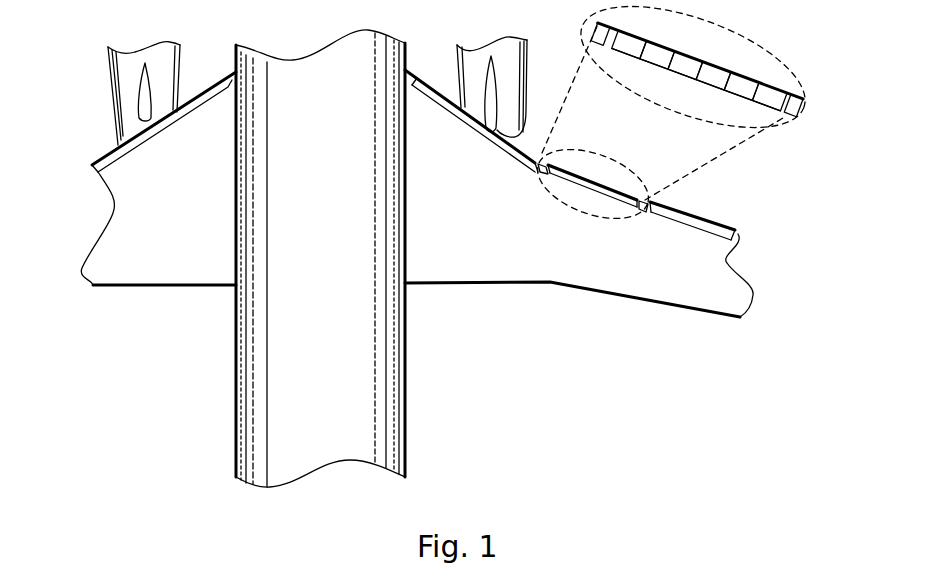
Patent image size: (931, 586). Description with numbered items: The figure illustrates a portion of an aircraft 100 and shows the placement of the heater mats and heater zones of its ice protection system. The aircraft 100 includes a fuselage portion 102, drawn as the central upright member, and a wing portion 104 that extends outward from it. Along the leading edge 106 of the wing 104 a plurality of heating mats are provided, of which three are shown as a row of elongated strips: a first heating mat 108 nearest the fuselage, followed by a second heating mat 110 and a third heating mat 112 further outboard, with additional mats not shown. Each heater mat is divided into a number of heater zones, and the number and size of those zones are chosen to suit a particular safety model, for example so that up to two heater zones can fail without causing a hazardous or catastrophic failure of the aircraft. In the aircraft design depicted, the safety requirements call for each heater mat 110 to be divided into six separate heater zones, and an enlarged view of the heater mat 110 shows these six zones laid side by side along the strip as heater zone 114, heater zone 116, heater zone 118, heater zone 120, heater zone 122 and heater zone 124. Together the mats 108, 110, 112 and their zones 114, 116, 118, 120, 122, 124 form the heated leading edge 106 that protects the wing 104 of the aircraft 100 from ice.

The aircraft 100 is at (449, 258).
The fuselage portion 102 is at (307, 214).
The wing portion 104 is at (472, 237).
The leading edge 106 is at (740, 232).
The heating mat 108 is at (467, 115).
The heating mat 110 is at (613, 195).
The heating mat 112 is at (697, 215).
The heater zone 114 is at (629, 45).
The heater zone 116 is at (657, 55).
The heater zone 118 is at (685, 65).
The heater zone 120 is at (713, 76).
The heater zone 122 is at (741, 86).
The heater zone 124 is at (769, 97).